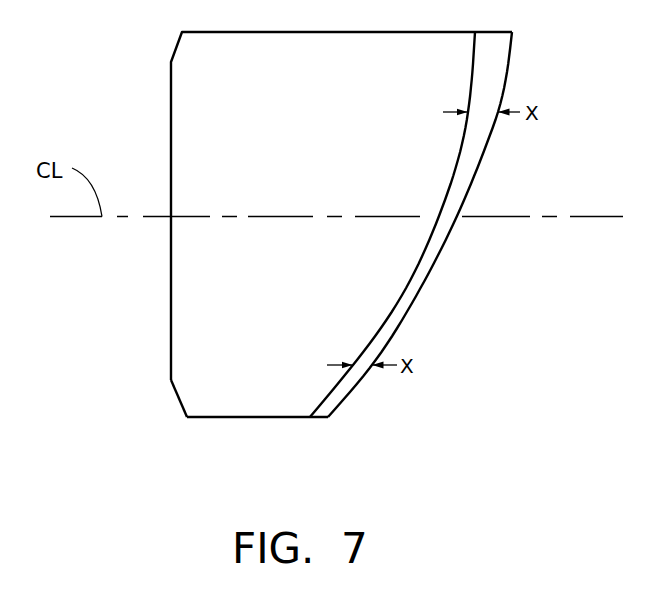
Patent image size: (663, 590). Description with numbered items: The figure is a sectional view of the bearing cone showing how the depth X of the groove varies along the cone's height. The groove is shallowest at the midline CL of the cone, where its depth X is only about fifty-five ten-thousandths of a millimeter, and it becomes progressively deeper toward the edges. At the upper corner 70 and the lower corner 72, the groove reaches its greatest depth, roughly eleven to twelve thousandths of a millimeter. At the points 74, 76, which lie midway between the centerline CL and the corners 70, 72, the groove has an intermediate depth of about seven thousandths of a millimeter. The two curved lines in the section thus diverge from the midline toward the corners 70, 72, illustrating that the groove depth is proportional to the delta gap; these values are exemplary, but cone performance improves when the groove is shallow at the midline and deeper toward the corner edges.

The upper corner 70 is at (530, 44).
The lower corner 72 is at (345, 423).
The point midway between centerline and upper corner 74 is at (494, 165).
The point midway between centerline and lower corner 76 is at (409, 328).